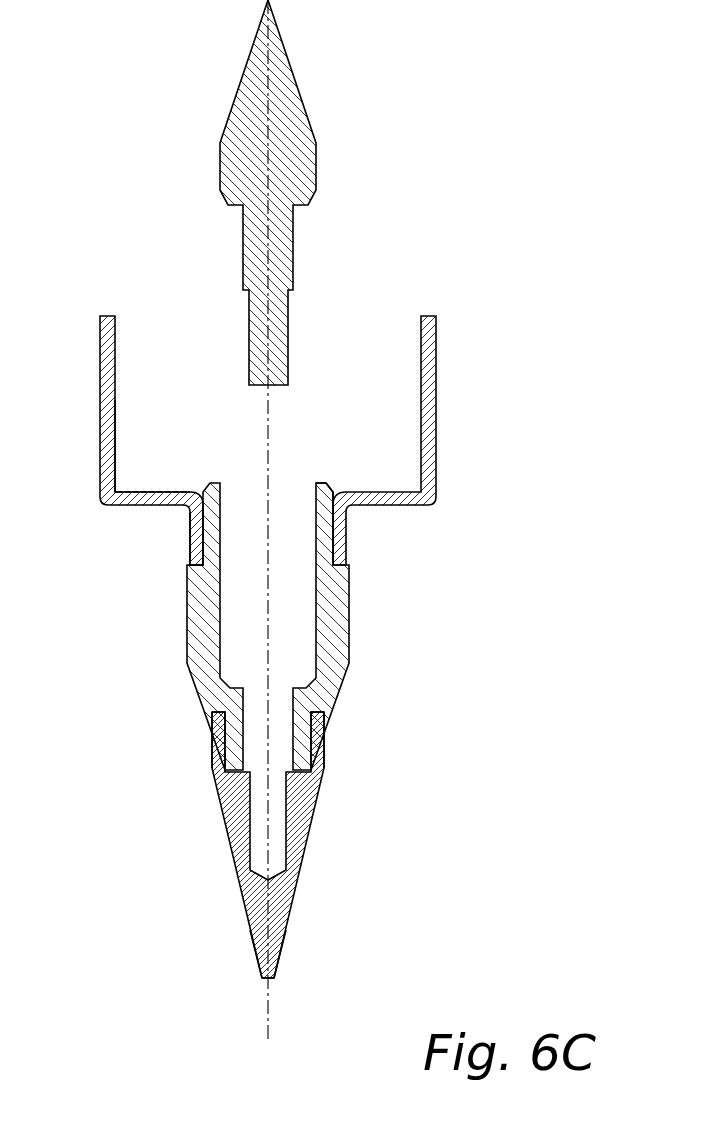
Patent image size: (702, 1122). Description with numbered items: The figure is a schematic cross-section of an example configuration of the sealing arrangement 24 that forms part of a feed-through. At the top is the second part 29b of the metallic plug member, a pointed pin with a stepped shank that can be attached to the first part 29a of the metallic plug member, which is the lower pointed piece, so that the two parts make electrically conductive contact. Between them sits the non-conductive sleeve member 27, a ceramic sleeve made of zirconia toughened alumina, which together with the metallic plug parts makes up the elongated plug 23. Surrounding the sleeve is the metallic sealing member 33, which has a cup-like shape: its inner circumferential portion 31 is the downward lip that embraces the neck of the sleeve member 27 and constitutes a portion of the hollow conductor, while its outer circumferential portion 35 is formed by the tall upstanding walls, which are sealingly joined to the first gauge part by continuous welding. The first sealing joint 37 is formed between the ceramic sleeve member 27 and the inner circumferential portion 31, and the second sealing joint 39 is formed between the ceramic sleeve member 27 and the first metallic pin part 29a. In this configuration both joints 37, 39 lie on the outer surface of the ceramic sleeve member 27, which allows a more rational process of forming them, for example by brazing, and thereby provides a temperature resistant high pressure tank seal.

The elongated plug 23 is at (289, 988).
The sealing arrangement 24 is at (297, 532).
The non-conductive sleeve member 27 is at (350, 640).
The first part of the metallic plug member 29a is at (231, 870).
The second part of the metallic plug member 29b is at (230, 152).
The inner circumferential portion 31 is at (176, 529).
The metallic sealing member 33 is at (135, 468).
The outer circumferential portion 35 is at (100, 304).
The first sealing joint 37 is at (330, 517).
The second sealing joint 39 is at (308, 720).